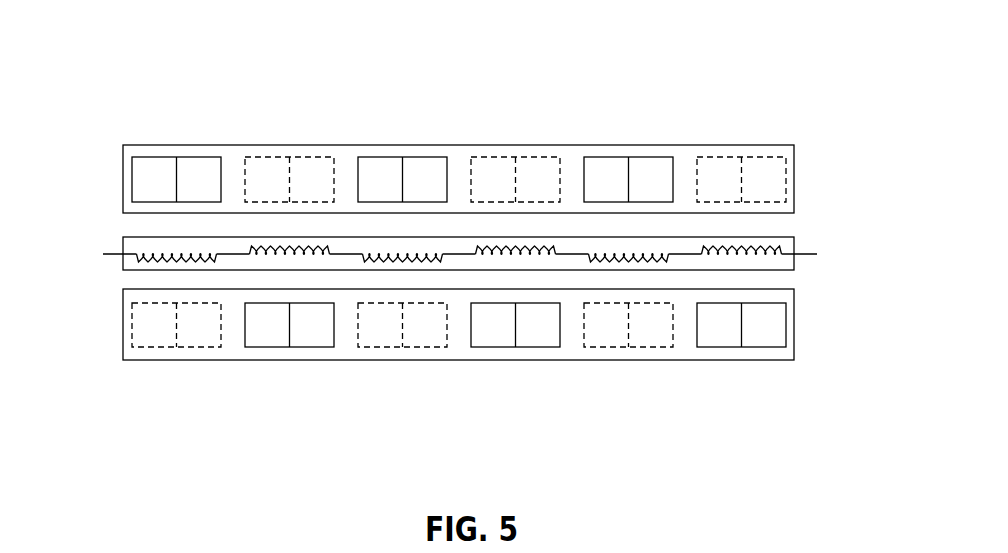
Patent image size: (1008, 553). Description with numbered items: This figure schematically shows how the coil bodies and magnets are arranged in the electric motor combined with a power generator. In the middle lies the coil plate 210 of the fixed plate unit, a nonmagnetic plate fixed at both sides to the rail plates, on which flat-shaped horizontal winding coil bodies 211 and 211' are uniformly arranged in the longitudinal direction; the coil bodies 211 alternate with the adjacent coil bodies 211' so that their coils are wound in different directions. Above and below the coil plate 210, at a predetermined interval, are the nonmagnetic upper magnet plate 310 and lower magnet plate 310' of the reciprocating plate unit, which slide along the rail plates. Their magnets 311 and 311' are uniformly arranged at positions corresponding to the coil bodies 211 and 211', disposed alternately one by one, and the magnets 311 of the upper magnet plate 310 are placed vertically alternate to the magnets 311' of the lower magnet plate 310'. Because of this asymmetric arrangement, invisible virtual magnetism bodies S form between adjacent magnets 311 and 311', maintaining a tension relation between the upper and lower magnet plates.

The upper magnet plate 310 is at (458, 129).
The magnets of the upper magnet plate 311 is at (392, 110).
The virtual magnetism body S is at (280, 157).
The lower magnet plate 310' is at (458, 372).
The magnets of the lower magnet plate 311' is at (515, 391).
The coil plate 210 is at (780, 237).
The coil bodies 211 is at (356, 211).
The coil bodies (oppositely wound) 211' is at (516, 156).